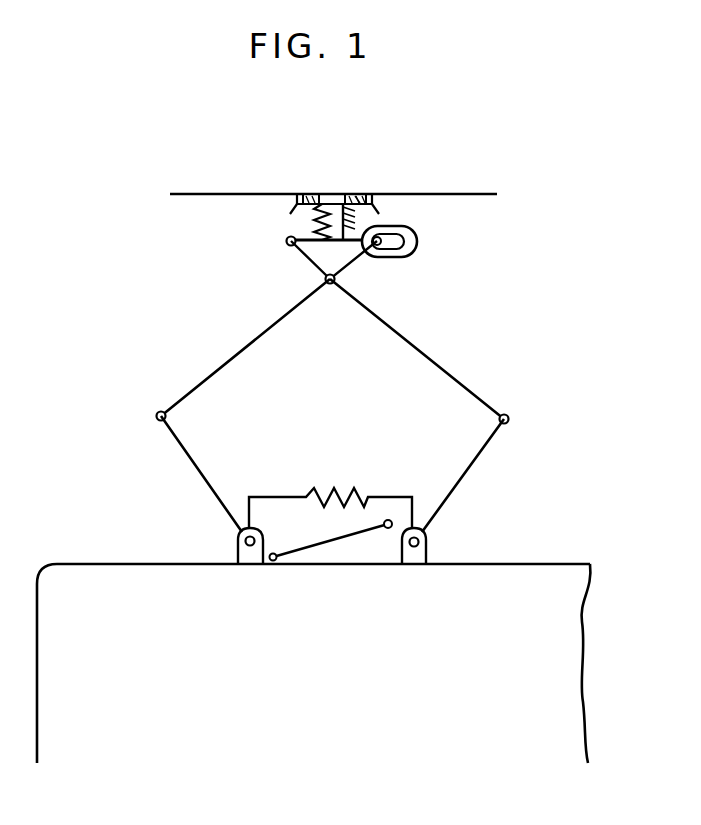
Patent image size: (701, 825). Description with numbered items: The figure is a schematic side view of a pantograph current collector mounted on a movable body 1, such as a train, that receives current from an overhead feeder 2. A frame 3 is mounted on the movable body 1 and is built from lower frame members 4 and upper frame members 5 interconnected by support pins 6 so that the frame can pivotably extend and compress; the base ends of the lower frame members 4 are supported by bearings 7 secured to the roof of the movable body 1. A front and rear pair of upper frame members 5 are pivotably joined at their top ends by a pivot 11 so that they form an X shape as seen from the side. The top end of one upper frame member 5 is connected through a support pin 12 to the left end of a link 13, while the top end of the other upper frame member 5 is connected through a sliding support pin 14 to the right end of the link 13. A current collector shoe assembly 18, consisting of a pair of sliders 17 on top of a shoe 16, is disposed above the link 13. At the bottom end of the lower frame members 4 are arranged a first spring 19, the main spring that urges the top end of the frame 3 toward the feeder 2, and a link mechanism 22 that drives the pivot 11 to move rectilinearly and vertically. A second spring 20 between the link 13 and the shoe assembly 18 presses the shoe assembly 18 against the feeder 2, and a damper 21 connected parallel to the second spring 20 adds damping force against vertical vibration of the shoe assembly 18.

The movable body 1 is at (92, 572).
The feeder 2 is at (485, 196).
The frame 3 is at (484, 396).
The lower frame members 4 is at (190, 456).
The upper frame members 5 is at (240, 351).
The support pins 6 is at (159, 414).
The bearings 7 is at (427, 548).
The pivot 11 is at (331, 286).
The support pin 12 is at (288, 250).
The link 13 is at (290, 239).
The sliding support pin 14 is at (380, 257).
The shoe 16 is at (374, 194).
The sliders 17 is at (313, 196).
The current collector shoe assembly 18 is at (300, 197).
The first spring 19 is at (338, 492).
The second spring 20 is at (312, 218).
The damper 21 is at (368, 217).
The link mechanism 22 is at (337, 543).